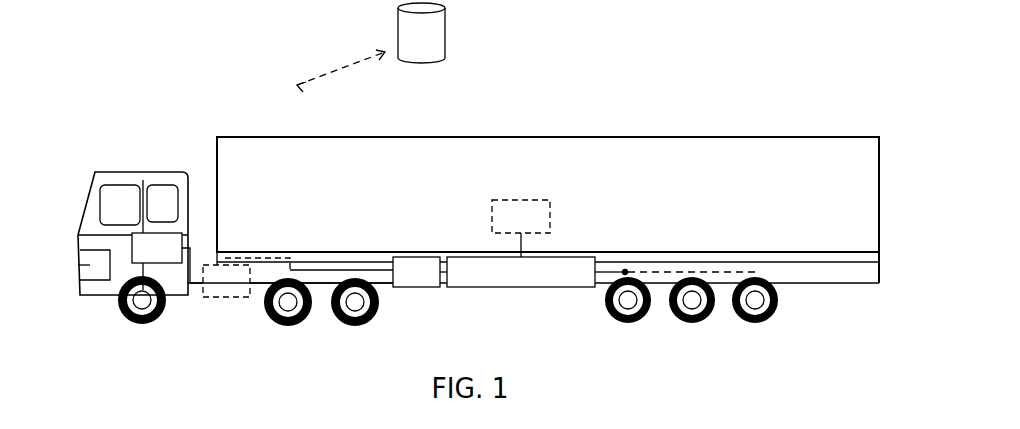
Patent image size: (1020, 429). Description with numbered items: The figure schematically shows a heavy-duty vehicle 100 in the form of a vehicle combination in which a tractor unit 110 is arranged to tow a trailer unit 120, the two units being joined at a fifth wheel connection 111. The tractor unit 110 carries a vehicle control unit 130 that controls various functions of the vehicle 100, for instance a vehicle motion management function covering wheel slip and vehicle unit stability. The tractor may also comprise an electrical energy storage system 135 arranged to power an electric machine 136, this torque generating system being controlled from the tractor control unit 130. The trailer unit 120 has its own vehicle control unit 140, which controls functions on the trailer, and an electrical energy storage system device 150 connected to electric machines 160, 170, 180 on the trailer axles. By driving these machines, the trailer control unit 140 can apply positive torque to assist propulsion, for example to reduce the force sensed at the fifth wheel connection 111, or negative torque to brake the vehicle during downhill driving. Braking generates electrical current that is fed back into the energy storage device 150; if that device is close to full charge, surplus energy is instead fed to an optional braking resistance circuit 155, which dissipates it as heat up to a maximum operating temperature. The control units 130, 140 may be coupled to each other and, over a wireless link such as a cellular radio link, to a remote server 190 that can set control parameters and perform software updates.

The heavy-duty vehicle 100 is at (80, 52).
The tractor unit 110 is at (100, 178).
The fifth wheel connection 111 is at (290, 268).
The trailer unit 120 is at (395, 137).
The vehicle control unit 130 is at (167, 258).
The electrical energy storage system 135 is at (246, 277).
The electric machine 136 is at (270, 306).
The vehicle control unit 140 is at (420, 272).
The electrical energy storage system device 150 is at (603, 272).
The braking resistance circuit 155 is at (521, 228).
The electric machine 160 is at (612, 288).
The electric machine 170 is at (700, 278).
The electric machine 180 is at (760, 278).
The remote server 190 is at (447, 38).